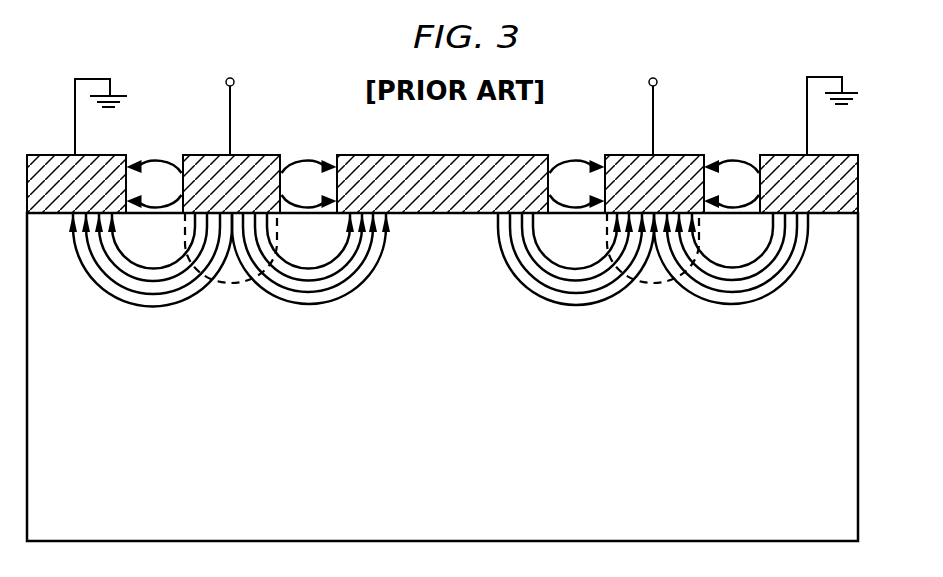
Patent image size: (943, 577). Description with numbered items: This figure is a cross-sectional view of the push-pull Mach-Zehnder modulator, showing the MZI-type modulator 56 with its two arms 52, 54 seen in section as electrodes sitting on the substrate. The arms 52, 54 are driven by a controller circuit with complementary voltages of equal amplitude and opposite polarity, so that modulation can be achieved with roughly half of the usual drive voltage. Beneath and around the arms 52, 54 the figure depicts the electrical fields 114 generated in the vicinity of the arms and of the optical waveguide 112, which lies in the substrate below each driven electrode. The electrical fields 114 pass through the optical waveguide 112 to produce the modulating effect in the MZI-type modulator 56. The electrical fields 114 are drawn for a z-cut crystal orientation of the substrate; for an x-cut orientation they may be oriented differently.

The arm 52 is at (200, 156).
The arm 54 is at (677, 156).
The MZI-type modulator 56 is at (860, 243).
The optical waveguide 112 is at (231, 284).
The electrical fields 114 is at (569, 162).